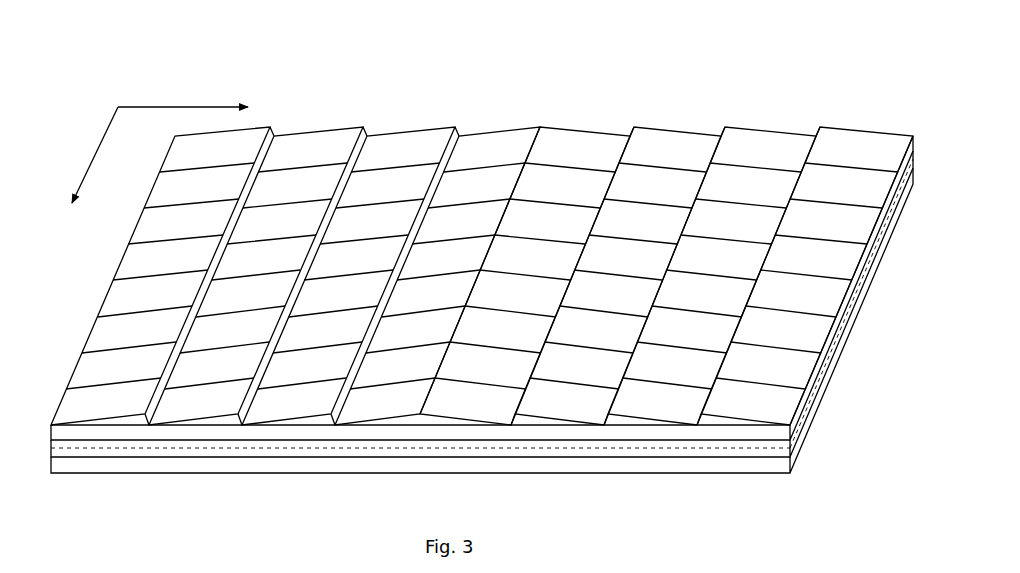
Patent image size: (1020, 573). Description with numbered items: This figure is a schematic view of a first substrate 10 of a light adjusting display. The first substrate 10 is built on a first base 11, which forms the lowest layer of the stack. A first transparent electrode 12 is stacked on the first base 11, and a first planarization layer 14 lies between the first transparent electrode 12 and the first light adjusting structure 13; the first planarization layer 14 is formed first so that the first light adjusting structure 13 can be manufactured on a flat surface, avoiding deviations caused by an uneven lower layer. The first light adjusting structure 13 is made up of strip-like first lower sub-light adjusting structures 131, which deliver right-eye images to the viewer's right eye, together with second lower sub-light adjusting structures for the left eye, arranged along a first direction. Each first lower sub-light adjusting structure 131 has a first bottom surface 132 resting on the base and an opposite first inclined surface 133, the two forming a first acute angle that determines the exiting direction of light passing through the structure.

The first substrate 10 is at (245, 28).
The first base 11 is at (365, 463).
The first transparent electrode 12 is at (425, 448).
The first light adjusting structure 13 is at (119, 267).
The first planarization layer 14 is at (475, 437).
The first lower sub-light adjusting structure 131 is at (563, 420).
The first bottom surface 132 is at (713, 428).
The first inclined surface 133 is at (777, 420).